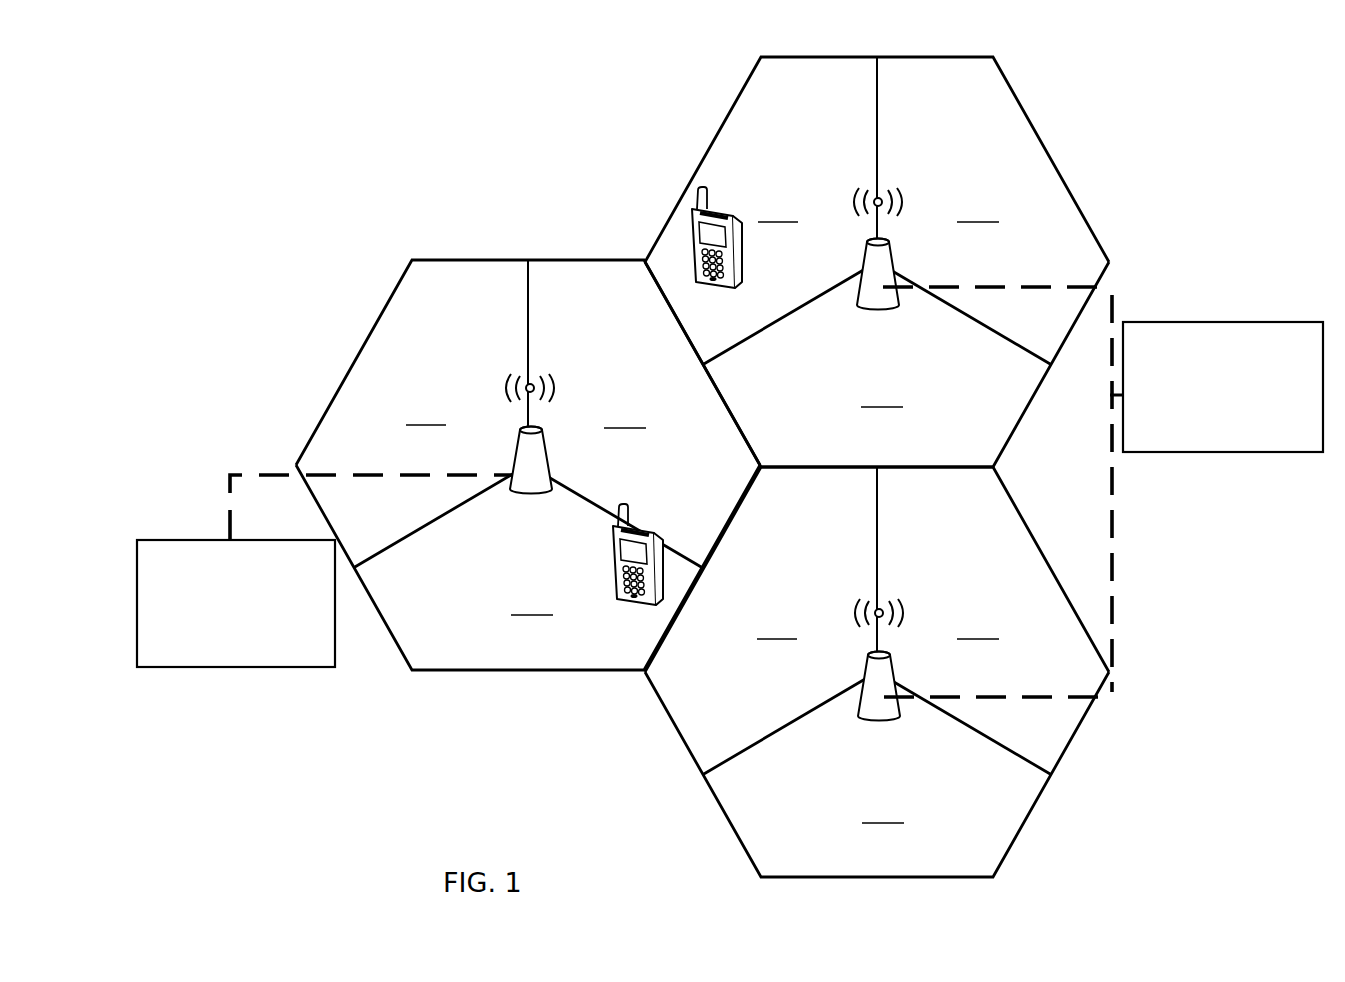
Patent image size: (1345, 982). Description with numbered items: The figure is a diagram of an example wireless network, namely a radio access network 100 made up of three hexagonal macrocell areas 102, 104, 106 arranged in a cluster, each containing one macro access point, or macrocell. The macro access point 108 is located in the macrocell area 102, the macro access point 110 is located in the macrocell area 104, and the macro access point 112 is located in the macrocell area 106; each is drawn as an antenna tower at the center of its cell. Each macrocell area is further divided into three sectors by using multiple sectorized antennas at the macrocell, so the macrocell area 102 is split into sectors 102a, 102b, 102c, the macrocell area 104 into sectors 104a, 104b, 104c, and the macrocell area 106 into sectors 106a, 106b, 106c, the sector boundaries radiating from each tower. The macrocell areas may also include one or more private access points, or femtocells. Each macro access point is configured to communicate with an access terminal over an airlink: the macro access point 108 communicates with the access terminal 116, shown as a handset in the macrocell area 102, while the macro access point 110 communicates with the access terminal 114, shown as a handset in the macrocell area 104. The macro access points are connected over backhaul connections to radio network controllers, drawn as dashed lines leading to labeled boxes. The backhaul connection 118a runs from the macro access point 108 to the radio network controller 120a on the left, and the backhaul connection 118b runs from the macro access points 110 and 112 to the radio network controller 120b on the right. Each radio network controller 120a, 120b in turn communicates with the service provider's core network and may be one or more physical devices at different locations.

The radio access network 100 is at (327, 137).
The macrocell area 102 is at (389, 301).
The sector 102a is at (412, 414).
The sector 102b is at (644, 414).
The sector 102c is at (528, 567).
The macrocell area 104 is at (1054, 163).
The sector 104a is at (761, 211).
The sector 104b is at (993, 211).
The sector 104c is at (877, 364).
The macrocell area 106 is at (711, 790).
The sector 106a is at (761, 621).
The sector 106b is at (993, 621).
The sector 106c is at (877, 774).
The macro access point 108 is at (531, 494).
The macro access point 110 is at (878, 310).
The macro access point 112 is at (880, 721).
The access terminal 114 is at (742, 262).
The access terminal 116 is at (632, 606).
The backhaul connection 118a is at (228, 480).
The backhaul connection 118b is at (1112, 583).
The radio network controller 120a is at (259, 657).
The radio network controller 120b is at (1244, 441).